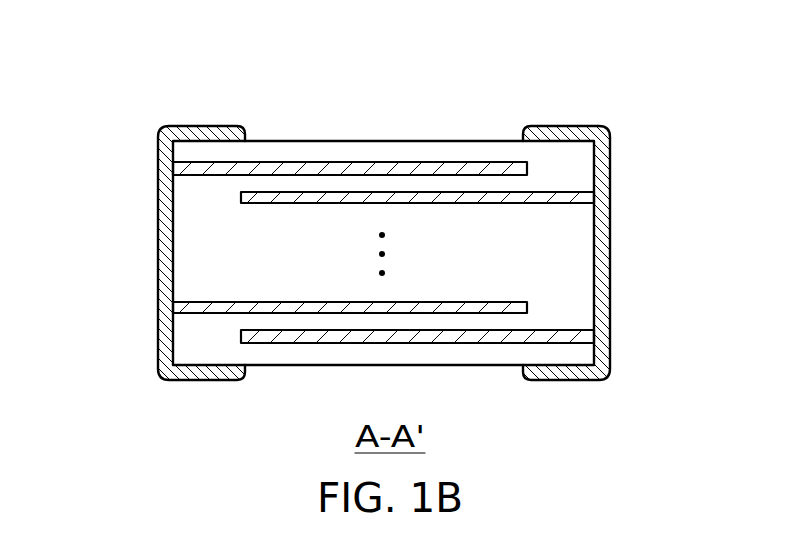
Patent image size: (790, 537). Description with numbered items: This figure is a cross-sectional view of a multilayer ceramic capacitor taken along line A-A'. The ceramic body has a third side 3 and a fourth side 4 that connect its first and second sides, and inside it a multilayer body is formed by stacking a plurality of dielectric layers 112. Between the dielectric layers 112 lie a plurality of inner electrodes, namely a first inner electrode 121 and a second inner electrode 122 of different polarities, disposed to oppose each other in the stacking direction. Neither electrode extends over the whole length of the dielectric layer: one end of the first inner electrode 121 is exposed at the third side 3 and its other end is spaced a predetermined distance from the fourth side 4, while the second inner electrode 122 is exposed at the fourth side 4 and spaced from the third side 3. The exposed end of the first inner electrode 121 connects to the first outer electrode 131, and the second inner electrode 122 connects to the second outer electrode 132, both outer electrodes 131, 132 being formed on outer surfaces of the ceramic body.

The third side 3 is at (255, 215).
The fourth side 4 is at (525, 205).
The dielectric layer 112 is at (520, 322).
The first inner electrode 121 is at (181, 167).
The second inner electrode 122 is at (563, 339).
The first outer electrode 131 is at (203, 128).
The second outer electrode 132 is at (567, 127).